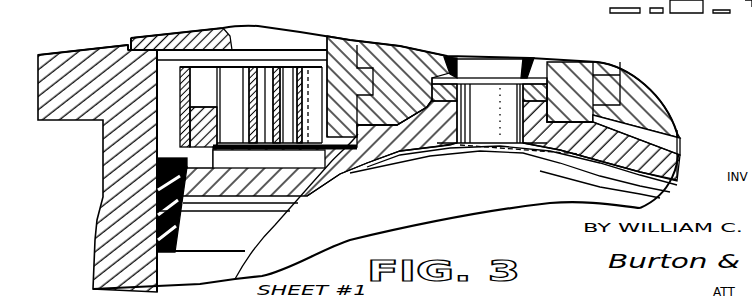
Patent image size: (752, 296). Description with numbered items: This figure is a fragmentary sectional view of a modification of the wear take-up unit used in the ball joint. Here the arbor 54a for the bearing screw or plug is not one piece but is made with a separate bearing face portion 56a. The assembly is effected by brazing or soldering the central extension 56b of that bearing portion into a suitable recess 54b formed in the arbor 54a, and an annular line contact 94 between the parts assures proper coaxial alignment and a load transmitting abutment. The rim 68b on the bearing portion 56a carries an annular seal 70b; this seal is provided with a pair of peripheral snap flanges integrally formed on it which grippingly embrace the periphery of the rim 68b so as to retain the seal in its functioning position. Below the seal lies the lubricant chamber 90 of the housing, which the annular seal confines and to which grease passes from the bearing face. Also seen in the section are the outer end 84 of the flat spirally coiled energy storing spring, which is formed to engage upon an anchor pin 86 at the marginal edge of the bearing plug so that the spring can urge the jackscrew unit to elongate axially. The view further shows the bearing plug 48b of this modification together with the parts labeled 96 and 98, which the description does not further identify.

The outer end 84 is at (186, 78).
The anchor pin 86 is at (193, 113).
The arbor 54a is at (408, 67).
The recess 54b is at (539, 88).
The bearing face portion 56a is at (340, 170).
The central extension 56b is at (447, 86).
The annular line contact 94 is at (392, 152).
The rim member 48b is at (572, 148).
The rim 68b is at (282, 212).
The annular seal 70b is at (150, 182).
The chamber 90 is at (170, 268).
The seal bar 96 is at (158, 158).
The seal strip 98 is at (187, 203).